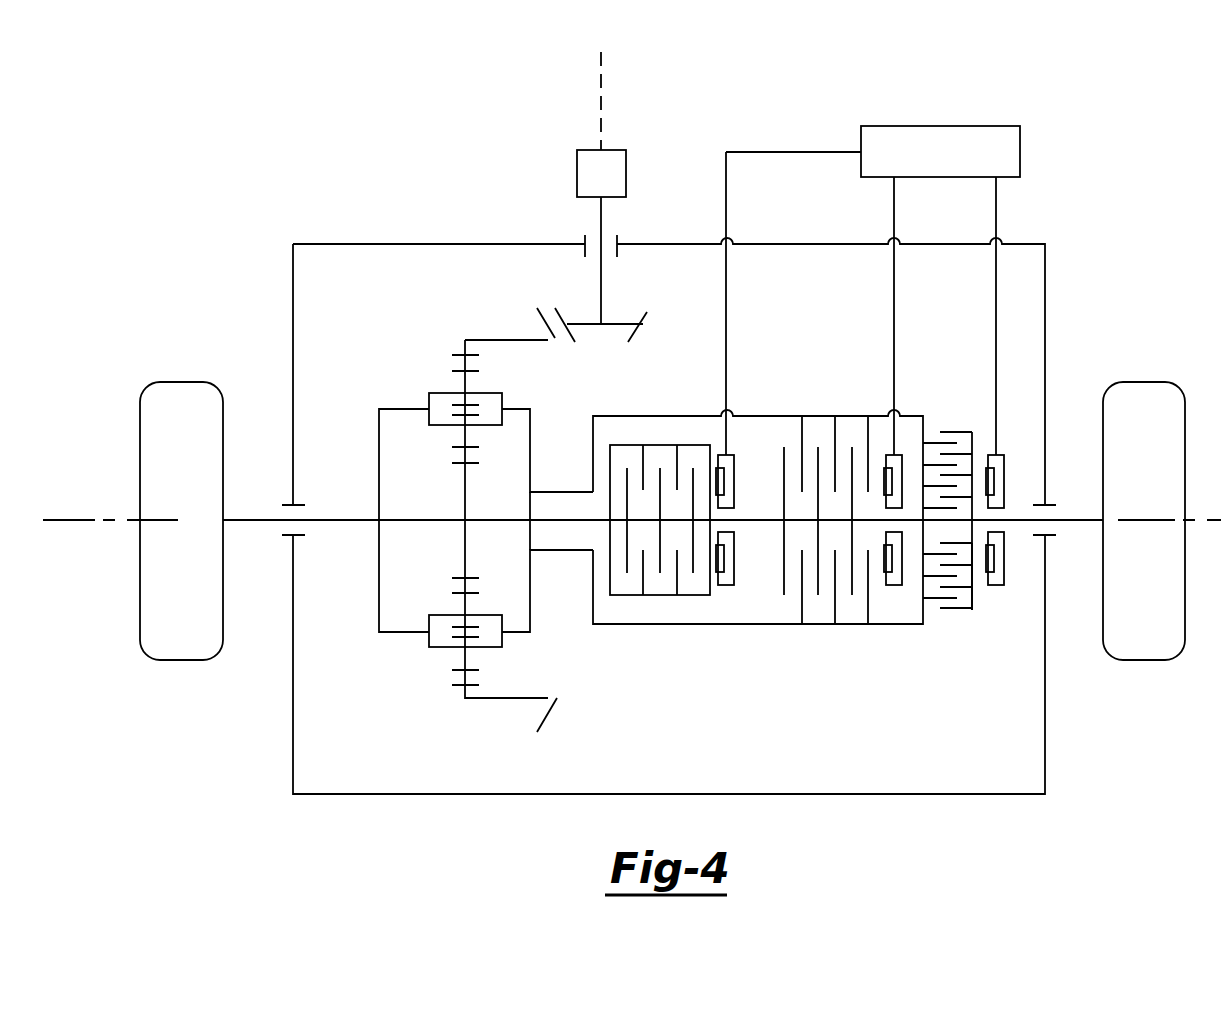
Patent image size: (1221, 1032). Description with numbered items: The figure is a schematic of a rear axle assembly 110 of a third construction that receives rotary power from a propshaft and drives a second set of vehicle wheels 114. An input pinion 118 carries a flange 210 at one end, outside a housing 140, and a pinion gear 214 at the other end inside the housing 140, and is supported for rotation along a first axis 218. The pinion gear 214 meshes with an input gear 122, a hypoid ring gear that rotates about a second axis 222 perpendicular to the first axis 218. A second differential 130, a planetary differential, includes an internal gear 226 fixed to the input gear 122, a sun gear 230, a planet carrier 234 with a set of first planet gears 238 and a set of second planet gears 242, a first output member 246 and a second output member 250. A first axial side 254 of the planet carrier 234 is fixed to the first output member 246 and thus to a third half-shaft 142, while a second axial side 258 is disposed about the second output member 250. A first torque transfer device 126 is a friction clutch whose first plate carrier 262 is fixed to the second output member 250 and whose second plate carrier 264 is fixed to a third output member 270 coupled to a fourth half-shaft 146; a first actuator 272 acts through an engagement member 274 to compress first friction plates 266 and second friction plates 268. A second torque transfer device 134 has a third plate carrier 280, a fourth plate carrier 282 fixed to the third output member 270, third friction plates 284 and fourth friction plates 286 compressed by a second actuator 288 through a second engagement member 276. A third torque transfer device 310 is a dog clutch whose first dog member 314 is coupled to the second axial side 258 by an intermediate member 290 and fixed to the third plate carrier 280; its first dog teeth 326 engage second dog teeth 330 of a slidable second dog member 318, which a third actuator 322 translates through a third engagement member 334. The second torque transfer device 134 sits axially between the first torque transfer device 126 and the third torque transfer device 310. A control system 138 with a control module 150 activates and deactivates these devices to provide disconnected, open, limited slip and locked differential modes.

The rear axle assembly 110 is at (290, 230).
The vehicle wheels 114 is at (185, 381).
The input pinion 118 is at (600, 270).
The input gear 122 is at (537, 317).
The first torque transfer device 126 is at (638, 600).
The second differential 130 is at (370, 605).
The second torque transfer device 134 is at (830, 630).
The control system 138 is at (1060, 193).
The housing 140 is at (293, 262).
The third half-shaft 142 is at (245, 518).
The fourth half-shaft 146 is at (1073, 518).
The control module 150 is at (1003, 127).
The flange 210 is at (626, 160).
The pinion gear 214 is at (647, 312).
The first axis 218 is at (601, 66).
The second axis 222 is at (62, 518).
The internal gear 226 is at (462, 354).
The sun gear 230 is at (465, 473).
The planet carrier 234 is at (420, 640).
The first planet gears 238 is at (456, 373).
The second planet gears 242 is at (458, 436).
The first output member 246 is at (343, 522).
The second output member 250 is at (528, 516).
The first axial side 254 is at (385, 409).
The second axial side 258 is at (531, 432).
The first plate carrier 262 is at (627, 445).
The second plate carrier 264 is at (683, 522).
The first friction plates 266 is at (643, 467).
The second friction plates 268 is at (677, 582).
The third output member 270 is at (757, 523).
The first actuator 272 is at (723, 453).
The engagement member 274 is at (718, 577).
The second engagement member 276 is at (890, 455).
The third plate carrier 280 is at (790, 446).
The fourth plate carrier 282 is at (793, 519).
The third friction plates 284 is at (818, 446).
The fourth friction plates 286 is at (812, 600).
The second actuator 288 is at (894, 588).
The intermediate member 290 is at (615, 626).
The third torque transfer device 310 is at (963, 630).
The first dog member 314 is at (926, 442).
The second dog member 318 is at (976, 612).
The third actuator 322 is at (1004, 578).
The first dog teeth 326 is at (966, 432).
The second dog teeth 330 is at (945, 612).
The third engagement member 334 is at (990, 455).